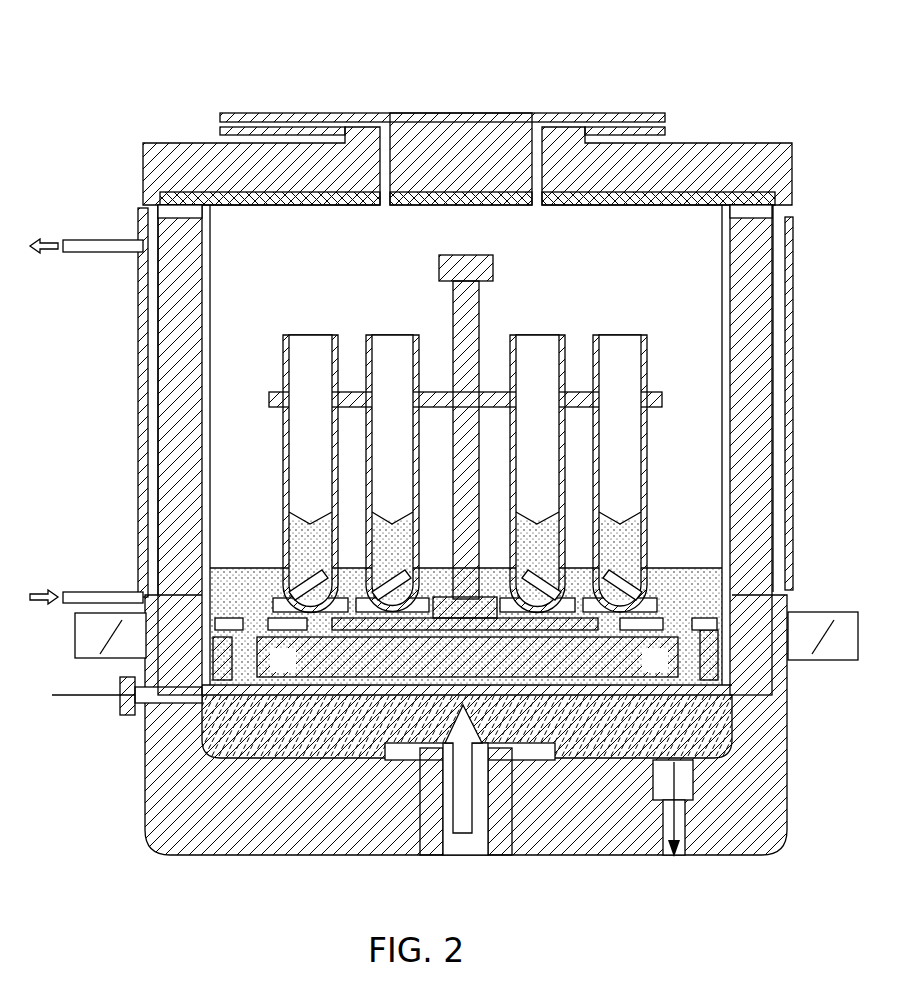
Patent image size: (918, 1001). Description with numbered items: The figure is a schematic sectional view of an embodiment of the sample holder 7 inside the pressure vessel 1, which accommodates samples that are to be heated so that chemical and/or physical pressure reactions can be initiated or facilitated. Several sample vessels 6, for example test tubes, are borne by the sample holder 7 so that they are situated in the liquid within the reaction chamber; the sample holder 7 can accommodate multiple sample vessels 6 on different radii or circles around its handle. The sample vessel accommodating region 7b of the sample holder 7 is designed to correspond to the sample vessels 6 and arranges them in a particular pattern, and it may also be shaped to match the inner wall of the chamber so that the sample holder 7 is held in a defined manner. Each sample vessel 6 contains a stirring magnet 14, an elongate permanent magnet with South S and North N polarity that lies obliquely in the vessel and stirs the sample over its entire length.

The pressure vessel 1 is at (785, 58).
The sample vessel 6 is at (362, 335).
The sample holder 7 is at (566, 288).
The sample vessel accommodating region 7b is at (300, 582).
The stirring magnet 14 is at (388, 548).
The South pole S is at (330, 520).
The North pole N is at (620, 535).